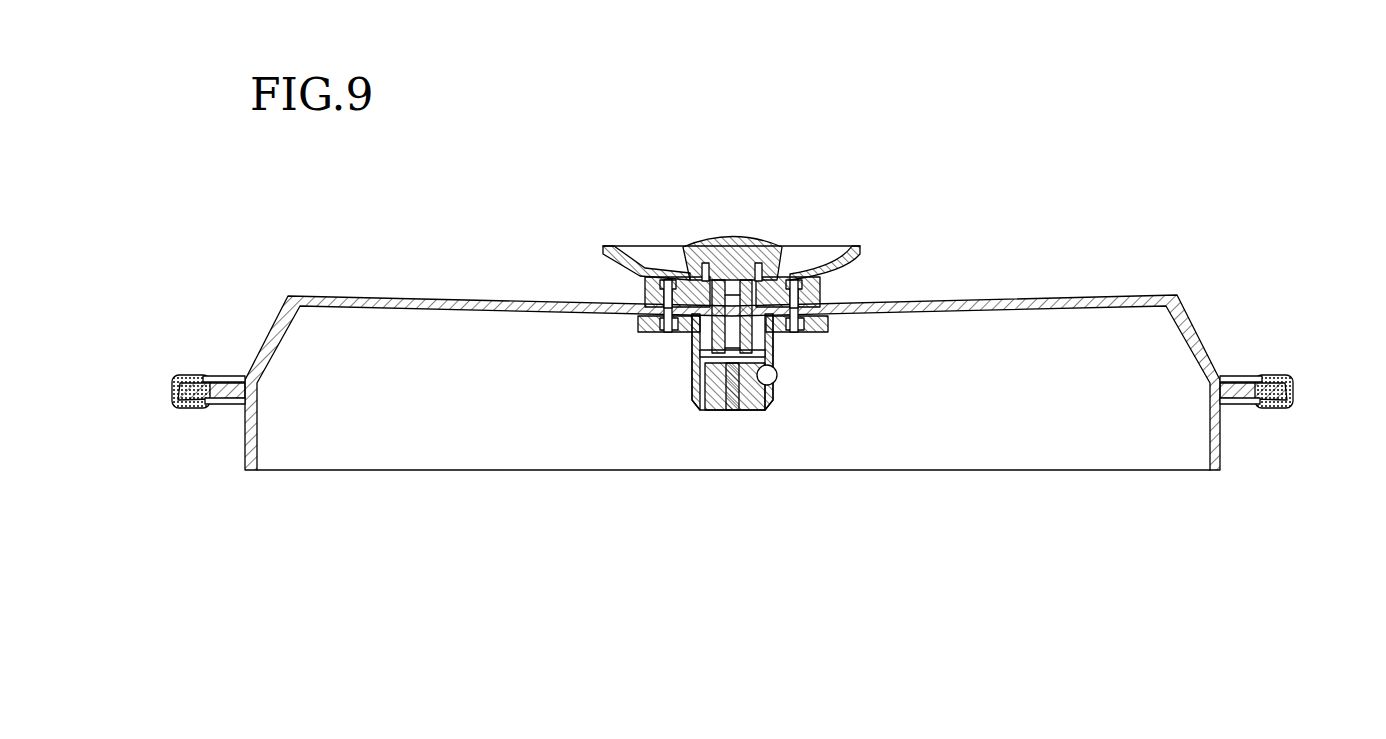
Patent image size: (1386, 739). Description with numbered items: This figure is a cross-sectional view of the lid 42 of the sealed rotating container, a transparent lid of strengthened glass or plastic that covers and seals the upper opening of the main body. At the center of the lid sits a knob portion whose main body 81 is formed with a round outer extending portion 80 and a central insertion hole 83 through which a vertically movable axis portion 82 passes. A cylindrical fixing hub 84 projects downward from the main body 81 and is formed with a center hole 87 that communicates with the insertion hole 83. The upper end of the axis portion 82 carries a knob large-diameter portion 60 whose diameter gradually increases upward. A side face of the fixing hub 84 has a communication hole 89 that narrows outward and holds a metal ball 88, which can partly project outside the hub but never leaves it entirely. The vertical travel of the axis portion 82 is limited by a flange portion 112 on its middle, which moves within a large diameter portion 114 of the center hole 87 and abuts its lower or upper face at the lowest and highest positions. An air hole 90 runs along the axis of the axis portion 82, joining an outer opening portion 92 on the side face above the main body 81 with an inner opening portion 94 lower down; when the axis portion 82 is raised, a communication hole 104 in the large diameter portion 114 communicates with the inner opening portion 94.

The lid 42 is at (968, 258).
The knob large-diameter portion 60 is at (738, 236).
The round outer extending portion 80 is at (842, 256).
The main body 81 is at (822, 283).
The axis portion 82 is at (769, 411).
The insertion hole 83 is at (765, 278).
The fixing hub 84 is at (700, 412).
The center hole 87 is at (745, 398).
The metal ball 88 is at (778, 378).
The communication hole 89 is at (694, 382).
The air hole 90 is at (713, 333).
The outer opening portion 92 is at (636, 274).
The inner opening portion 94 is at (758, 358).
The communication hole 104 is at (770, 336).
The flange portion 112 is at (700, 356).
The large diameter portion 114 is at (698, 331).